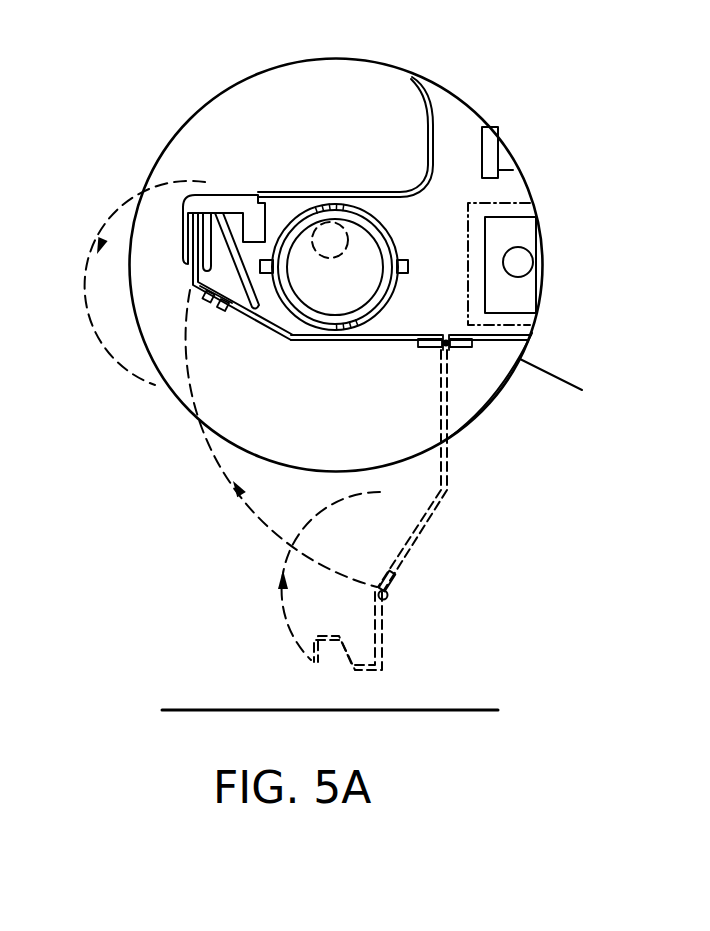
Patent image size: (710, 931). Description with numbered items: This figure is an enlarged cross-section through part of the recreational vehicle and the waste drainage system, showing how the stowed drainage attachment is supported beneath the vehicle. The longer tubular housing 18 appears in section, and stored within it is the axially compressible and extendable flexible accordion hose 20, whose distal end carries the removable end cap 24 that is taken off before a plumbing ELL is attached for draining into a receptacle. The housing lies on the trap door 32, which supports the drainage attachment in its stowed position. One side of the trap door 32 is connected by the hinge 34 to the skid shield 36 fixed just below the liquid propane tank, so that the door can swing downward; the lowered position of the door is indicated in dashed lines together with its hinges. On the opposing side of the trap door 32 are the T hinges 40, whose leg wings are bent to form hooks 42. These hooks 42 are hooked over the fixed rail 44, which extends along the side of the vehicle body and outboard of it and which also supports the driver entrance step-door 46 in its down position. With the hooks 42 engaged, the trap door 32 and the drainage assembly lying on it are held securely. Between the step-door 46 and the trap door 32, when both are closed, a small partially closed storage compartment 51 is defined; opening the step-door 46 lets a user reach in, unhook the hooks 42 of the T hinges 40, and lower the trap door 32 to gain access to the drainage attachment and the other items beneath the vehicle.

The longer tubular housing 18 is at (390, 298).
The flexible accordion hose 20 is at (378, 250).
The end cap 24 is at (385, 231).
The trap door 32 is at (328, 342).
The hinge 34 is at (443, 346).
The skid shield 36 is at (490, 343).
The T hinges 40 is at (230, 313).
The hooks 42 is at (249, 212).
The fixed rail 44 is at (196, 284).
The driver entrance step-door 46 is at (357, 190).
The storage compartment 51 is at (283, 318).